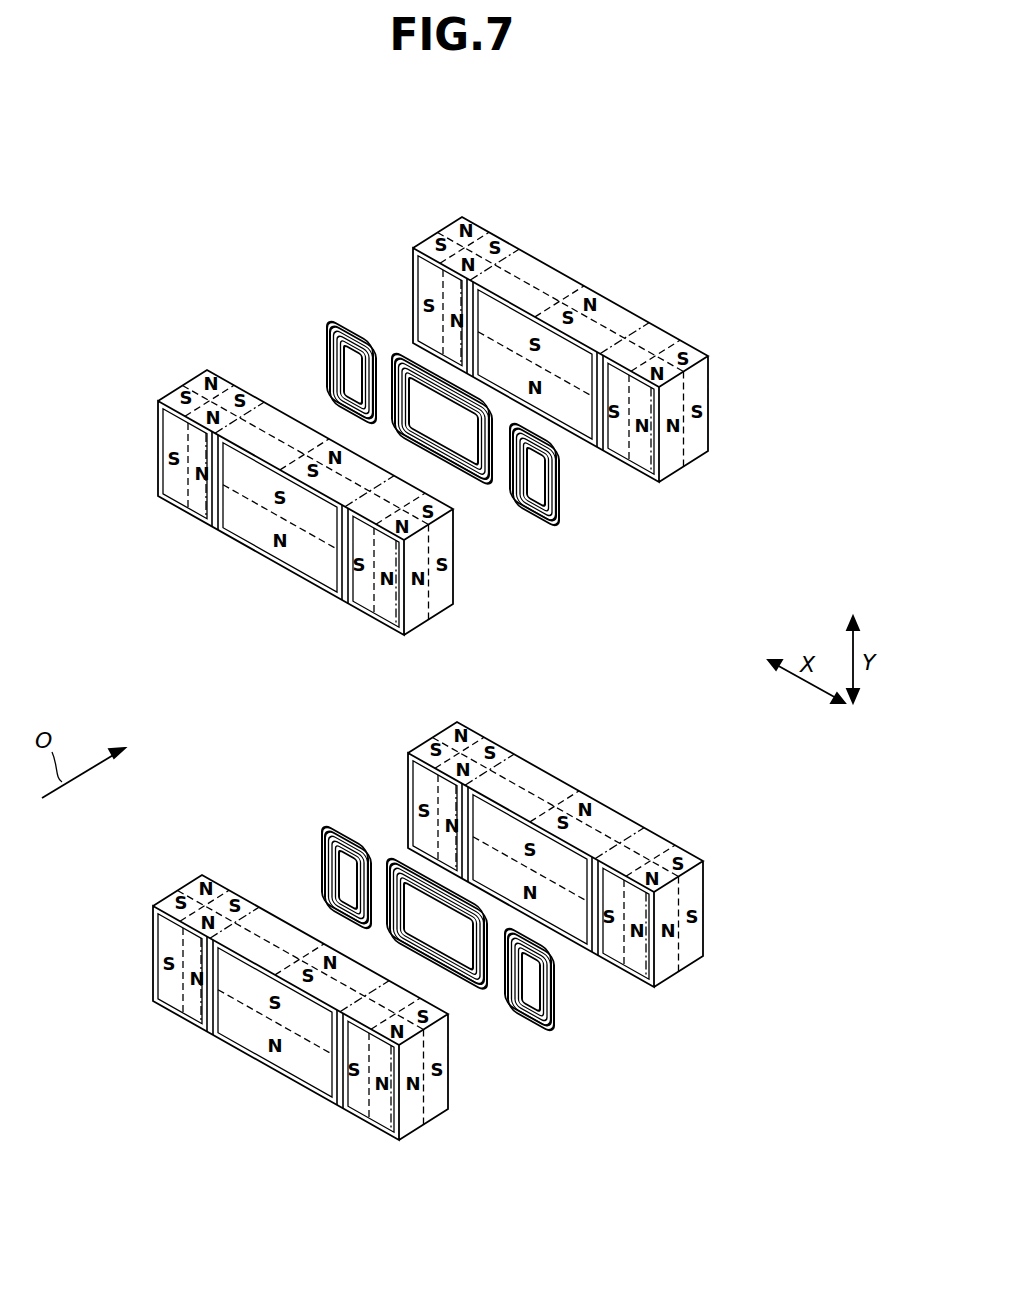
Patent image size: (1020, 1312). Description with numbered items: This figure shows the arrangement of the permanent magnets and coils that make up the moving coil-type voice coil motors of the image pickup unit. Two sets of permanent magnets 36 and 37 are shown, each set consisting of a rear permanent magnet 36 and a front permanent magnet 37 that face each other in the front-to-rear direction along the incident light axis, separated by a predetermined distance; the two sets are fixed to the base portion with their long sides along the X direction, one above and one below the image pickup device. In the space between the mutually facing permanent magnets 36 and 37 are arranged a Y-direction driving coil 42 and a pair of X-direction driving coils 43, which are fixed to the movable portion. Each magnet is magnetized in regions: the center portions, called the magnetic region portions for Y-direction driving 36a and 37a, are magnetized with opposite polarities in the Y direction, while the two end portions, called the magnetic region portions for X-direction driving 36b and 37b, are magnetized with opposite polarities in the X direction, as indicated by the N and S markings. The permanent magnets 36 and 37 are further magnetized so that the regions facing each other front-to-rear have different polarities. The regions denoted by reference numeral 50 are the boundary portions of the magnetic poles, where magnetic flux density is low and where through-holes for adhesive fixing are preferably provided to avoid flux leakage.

The permanent magnet 36 is at (158, 401).
The magnetic region portion for Y-direction driving 36a is at (253, 543).
The magnetic region portion for X-direction driving 36b is at (173, 498).
The permanent magnet 37 is at (413, 248).
The magnetic region portion for Y-direction driving 37a is at (517, 303).
The magnetic region portion for X-direction driving 37b is at (425, 257).
The boundary portion of magnetic poles 50 is at (190, 472).
The Y-direction driving coil 42 is at (400, 352).
The X-direction driving coil 43 is at (332, 318).